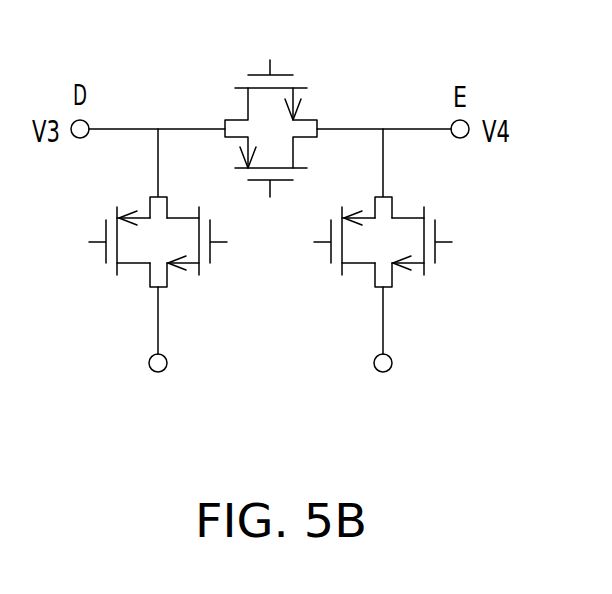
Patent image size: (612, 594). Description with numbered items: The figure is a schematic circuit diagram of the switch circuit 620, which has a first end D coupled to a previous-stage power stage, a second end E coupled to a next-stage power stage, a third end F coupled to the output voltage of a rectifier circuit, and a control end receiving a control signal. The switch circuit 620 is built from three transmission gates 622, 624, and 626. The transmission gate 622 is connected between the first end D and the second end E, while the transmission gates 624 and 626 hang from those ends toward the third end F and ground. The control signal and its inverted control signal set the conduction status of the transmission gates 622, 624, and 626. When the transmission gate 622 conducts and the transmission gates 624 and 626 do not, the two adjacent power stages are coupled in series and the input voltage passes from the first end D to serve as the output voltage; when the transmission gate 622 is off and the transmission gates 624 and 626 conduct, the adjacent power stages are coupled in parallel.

The switch circuit 620 is at (583, 428).
The transmission gate 622 is at (298, 87).
The transmission gate 624 is at (117, 270).
The transmission gate 626 is at (423, 268).